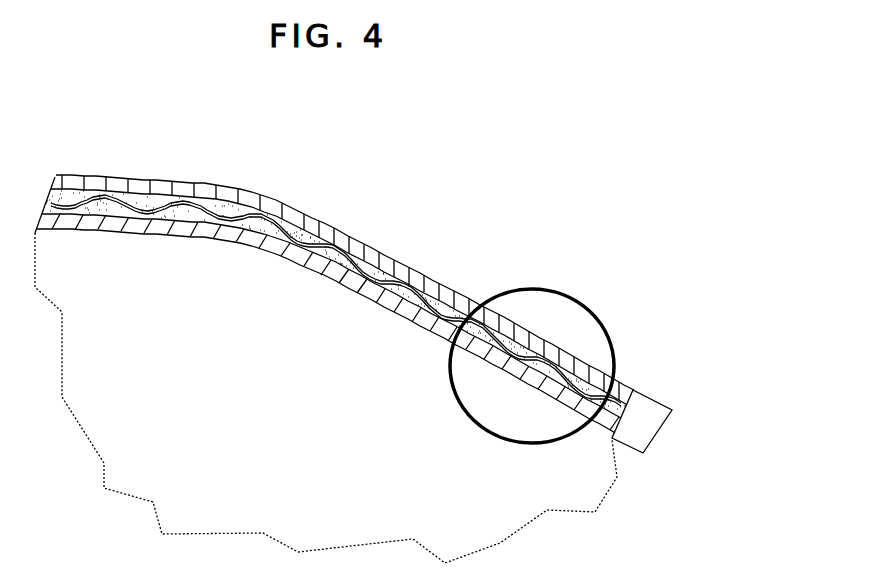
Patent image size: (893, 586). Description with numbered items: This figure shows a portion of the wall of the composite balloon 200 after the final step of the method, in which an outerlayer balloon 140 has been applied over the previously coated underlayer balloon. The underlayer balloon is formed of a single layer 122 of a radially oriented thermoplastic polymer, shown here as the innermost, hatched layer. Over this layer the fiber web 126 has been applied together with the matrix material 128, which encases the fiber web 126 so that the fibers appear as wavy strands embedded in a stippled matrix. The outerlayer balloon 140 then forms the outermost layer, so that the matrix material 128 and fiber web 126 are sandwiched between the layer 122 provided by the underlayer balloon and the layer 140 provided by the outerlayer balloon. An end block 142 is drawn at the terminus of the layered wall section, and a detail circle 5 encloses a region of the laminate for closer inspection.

The composite balloon 200 is at (334, 281).
The outerlayer balloon 140 is at (470, 300).
The fiber web 126 is at (413, 292).
The matrix material 128 is at (366, 267).
The single layer of radially oriented thermoplastic polymer 122 is at (368, 308).
The end block 142 is at (657, 431).
The detail circle 5 is at (550, 291).